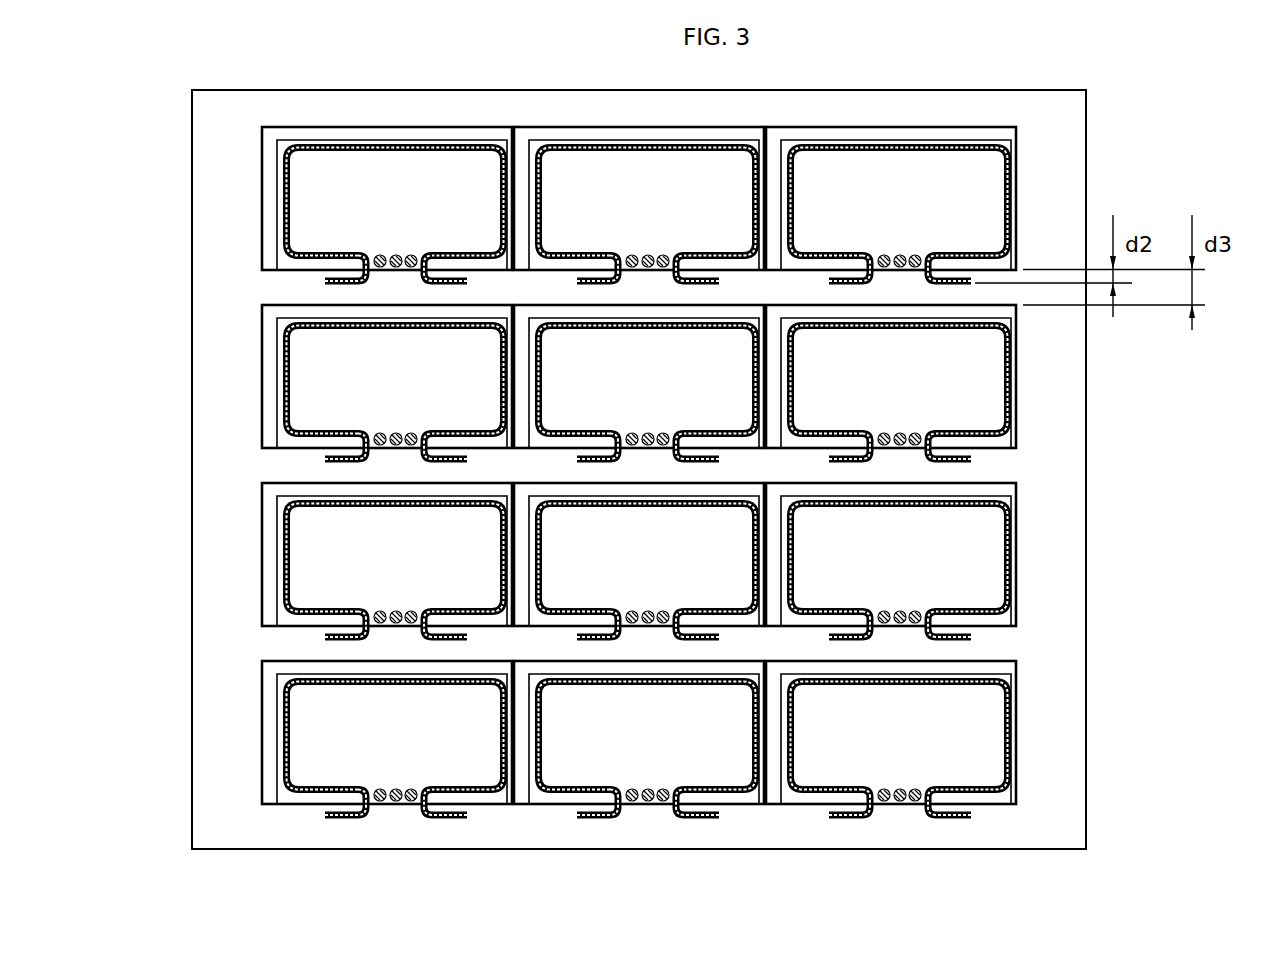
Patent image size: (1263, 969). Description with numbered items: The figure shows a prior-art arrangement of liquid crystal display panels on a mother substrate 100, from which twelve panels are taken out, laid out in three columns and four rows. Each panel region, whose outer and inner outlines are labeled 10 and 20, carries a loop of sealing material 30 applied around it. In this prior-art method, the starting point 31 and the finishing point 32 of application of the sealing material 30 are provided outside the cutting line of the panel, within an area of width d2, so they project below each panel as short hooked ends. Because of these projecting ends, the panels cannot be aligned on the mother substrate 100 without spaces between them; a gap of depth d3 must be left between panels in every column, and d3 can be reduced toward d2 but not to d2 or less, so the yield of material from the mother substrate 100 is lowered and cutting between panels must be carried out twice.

The mother substrate 100 is at (845, 90).
The antenna unit 10 is at (350, 127).
The magnetic sheet 20 is at (441, 140).
The sealing material 30 is at (283, 195).
The starting point 31 is at (325, 817).
The finishing point 32 is at (467, 817).